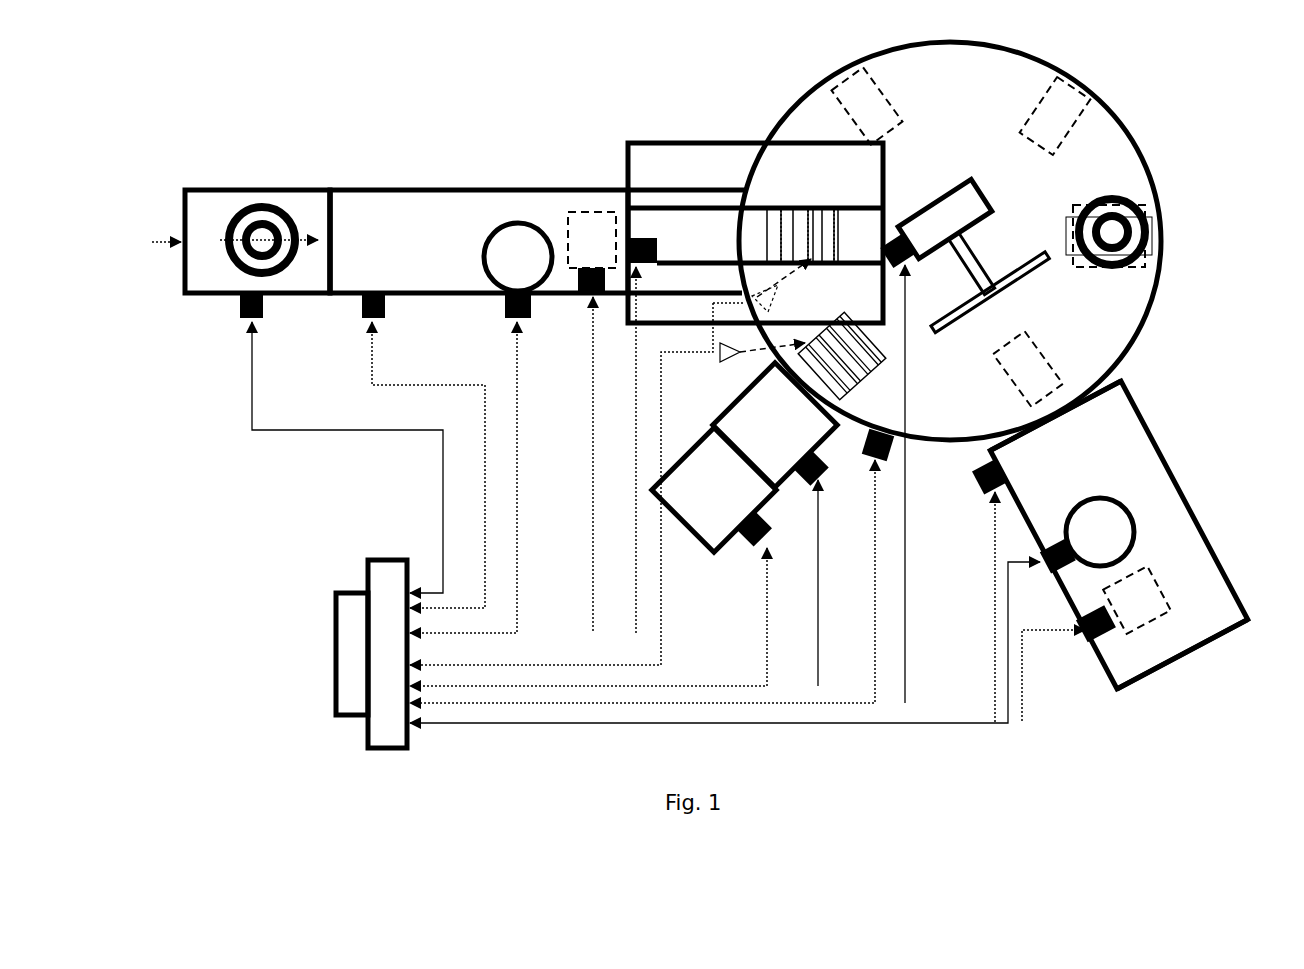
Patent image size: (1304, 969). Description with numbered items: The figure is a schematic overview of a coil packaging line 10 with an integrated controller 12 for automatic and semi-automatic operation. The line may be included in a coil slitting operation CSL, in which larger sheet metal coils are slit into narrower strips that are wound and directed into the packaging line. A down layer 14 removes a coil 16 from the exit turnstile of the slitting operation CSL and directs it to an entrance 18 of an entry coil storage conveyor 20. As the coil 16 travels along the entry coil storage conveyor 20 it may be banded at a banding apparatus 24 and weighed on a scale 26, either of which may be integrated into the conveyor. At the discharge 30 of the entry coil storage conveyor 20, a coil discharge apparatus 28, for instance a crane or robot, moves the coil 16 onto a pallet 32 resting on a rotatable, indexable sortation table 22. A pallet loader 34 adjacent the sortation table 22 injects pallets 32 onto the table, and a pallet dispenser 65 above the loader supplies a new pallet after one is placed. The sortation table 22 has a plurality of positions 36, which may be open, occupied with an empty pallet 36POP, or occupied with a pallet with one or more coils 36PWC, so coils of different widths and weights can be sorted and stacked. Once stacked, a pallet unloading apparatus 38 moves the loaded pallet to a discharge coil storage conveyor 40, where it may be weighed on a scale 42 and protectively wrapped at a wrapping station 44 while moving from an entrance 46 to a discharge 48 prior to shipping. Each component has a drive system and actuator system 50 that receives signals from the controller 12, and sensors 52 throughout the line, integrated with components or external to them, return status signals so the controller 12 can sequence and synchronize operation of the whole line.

The coil packaging line 10 is at (276, 101).
The controller 12 is at (336, 662).
The down layer 14 is at (226, 280).
The coil 16 is at (250, 208).
The entrance 18 is at (332, 198).
The entry coil storage conveyor 20 is at (385, 280).
The sortation table 22 is at (971, 76).
The banding apparatus 24 is at (505, 226).
The scale 26 is at (570, 214).
The coil discharge apparatus 28 is at (640, 143).
The discharge 30 is at (737, 235).
The pallet 32 is at (1148, 222).
The pallet loader 34 is at (786, 432).
The positions 36 is at (881, 117).
The position occupied with an empty pallet 36POP is at (802, 214).
The position occupied with a pallet with one or more coils 36PWC is at (1148, 244).
The pallet unloading apparatus 38 is at (960, 226).
The discharge coil storage conveyor 40 is at (1090, 472).
The scale 42 is at (1152, 610).
The wrapping station 44 is at (1115, 540).
The entrance 46 is at (1062, 428).
The discharge 48 is at (1140, 688).
The drive system and actuator system 50 is at (246, 320).
The sensors 52 is at (735, 352).
The pallet dispenser 65 is at (728, 497).
The coil slitting operation CSL is at (148, 243).